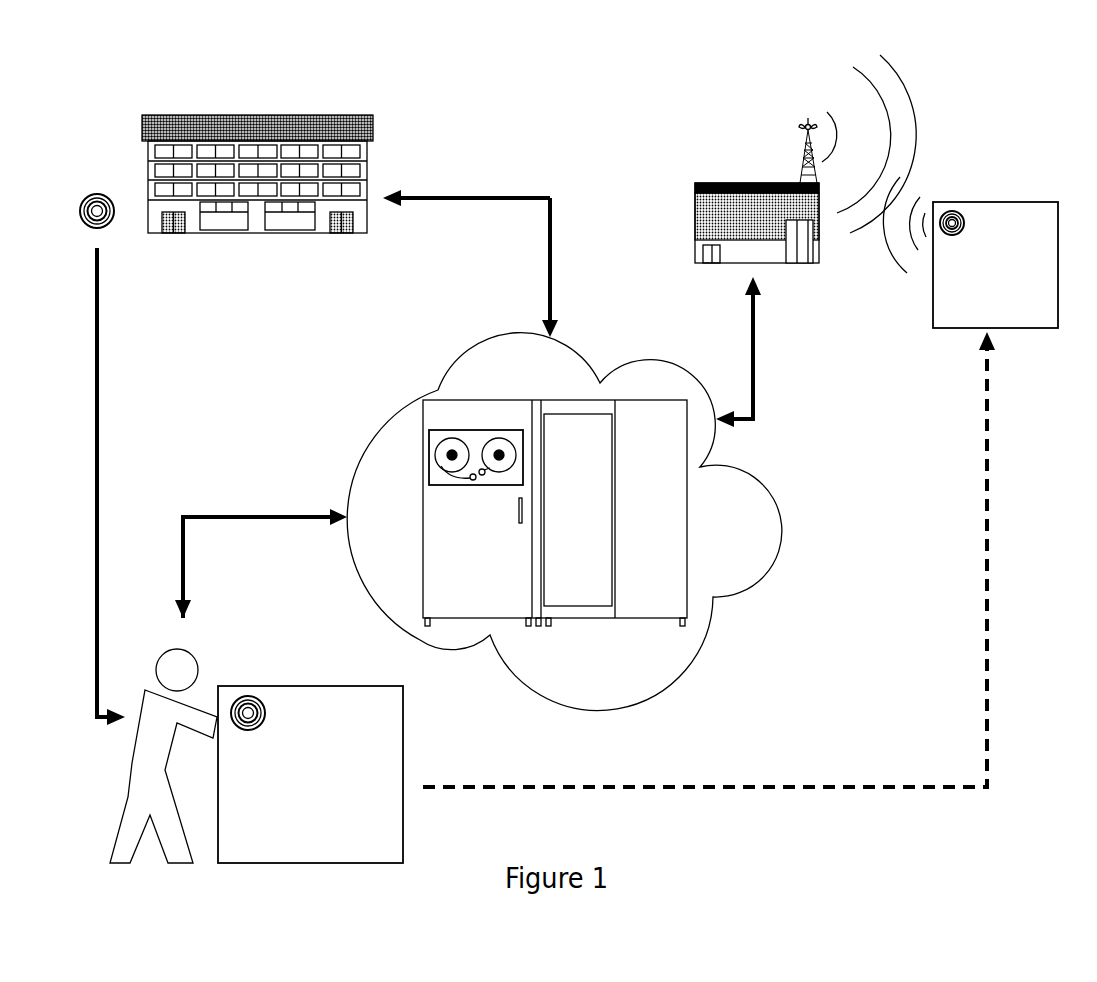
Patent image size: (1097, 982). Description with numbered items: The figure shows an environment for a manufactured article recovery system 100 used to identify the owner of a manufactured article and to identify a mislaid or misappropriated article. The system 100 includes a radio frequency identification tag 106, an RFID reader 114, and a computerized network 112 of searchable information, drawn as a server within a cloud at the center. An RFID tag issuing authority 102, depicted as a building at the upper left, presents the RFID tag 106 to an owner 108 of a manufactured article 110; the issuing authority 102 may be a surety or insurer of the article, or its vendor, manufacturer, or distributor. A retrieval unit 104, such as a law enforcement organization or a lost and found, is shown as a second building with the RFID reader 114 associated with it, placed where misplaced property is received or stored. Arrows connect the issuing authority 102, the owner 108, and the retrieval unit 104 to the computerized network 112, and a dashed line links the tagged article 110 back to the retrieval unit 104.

The manufactured article recovery system 100 is at (538, 37).
The RFID tag issuing authority 102 is at (374, 108).
The retrieval unit 104 is at (721, 159).
The RFID tag 106 is at (84, 203).
The owner 108 is at (158, 663).
The manufactured article 110 is at (981, 202).
The computerized network 112 is at (408, 400).
The RFID reader 114 is at (798, 165).